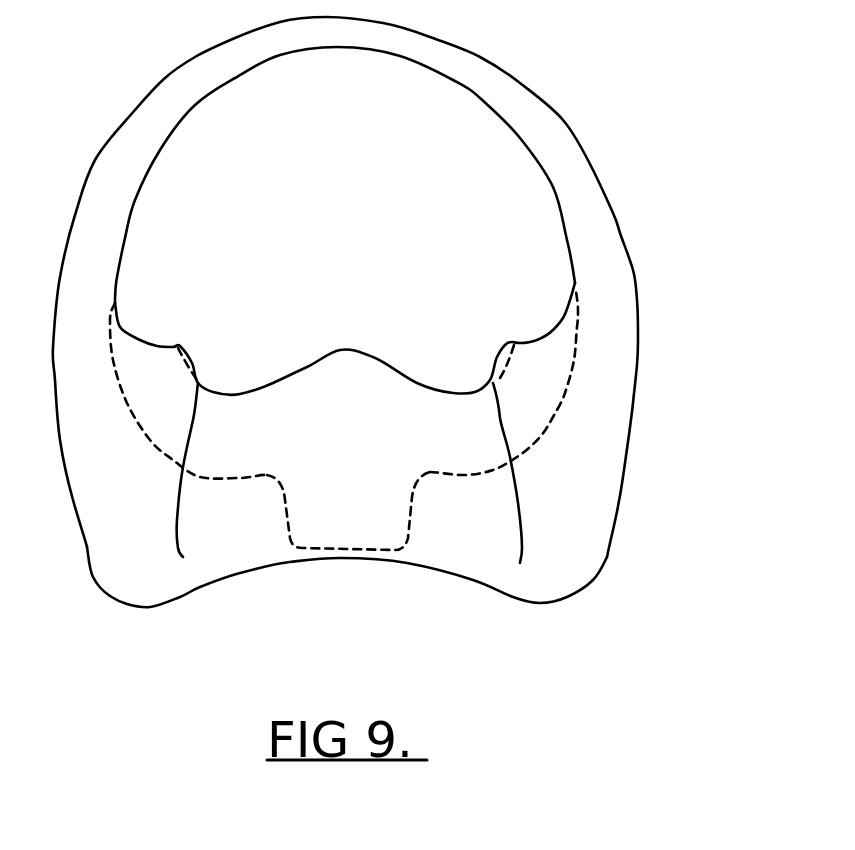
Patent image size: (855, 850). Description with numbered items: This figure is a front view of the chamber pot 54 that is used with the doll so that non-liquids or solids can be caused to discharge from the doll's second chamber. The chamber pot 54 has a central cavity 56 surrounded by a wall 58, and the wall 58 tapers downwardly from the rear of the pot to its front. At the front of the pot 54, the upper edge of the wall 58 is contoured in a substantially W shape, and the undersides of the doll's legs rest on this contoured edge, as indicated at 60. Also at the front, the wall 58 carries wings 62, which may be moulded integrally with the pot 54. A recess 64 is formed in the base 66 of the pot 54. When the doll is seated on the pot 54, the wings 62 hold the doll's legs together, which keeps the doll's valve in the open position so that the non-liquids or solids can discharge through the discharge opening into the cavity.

The chamber pot 54 is at (583, 102).
The central cavity 56 is at (350, 328).
The wall 58 is at (585, 245).
The W-shaped upper edge region for legs 60 is at (347, 378).
The wings 62 is at (158, 405).
The recess 64 is at (367, 530).
The base 66 is at (483, 553).